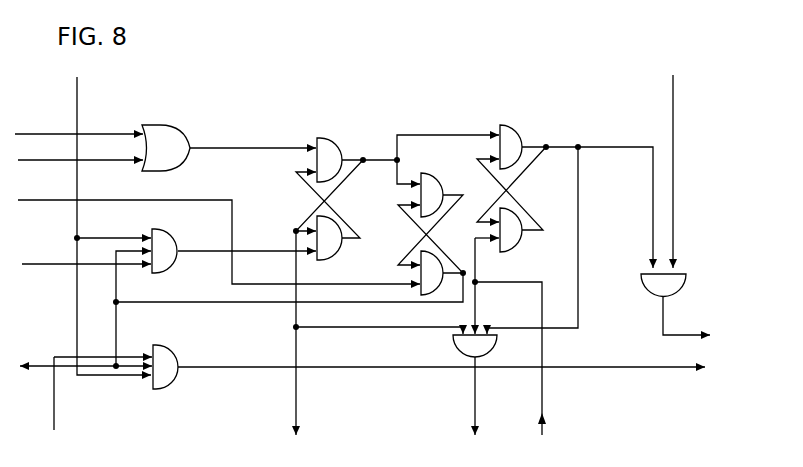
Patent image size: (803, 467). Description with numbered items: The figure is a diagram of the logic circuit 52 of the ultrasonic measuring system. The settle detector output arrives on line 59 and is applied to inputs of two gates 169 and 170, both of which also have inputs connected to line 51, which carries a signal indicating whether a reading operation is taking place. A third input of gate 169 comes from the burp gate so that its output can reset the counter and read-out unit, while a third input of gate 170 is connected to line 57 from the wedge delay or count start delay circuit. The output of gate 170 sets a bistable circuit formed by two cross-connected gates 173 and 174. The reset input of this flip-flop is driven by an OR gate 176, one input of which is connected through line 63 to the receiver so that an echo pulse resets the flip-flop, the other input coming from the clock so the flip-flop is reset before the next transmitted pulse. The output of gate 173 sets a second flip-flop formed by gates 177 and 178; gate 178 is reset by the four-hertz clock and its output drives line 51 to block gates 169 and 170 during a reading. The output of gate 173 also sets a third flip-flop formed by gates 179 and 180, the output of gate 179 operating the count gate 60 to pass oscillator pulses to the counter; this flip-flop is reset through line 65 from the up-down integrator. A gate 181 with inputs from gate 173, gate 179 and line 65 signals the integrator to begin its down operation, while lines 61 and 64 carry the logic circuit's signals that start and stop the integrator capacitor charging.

The logic circuit 52 is at (600, 58).
The line 59 is at (78, 92).
The line 63 is at (24, 163).
The OR gate 176 is at (173, 121).
The gate 173 is at (325, 138).
The gate 174 is at (331, 244).
The gate 177 is at (427, 153).
The gate 178 is at (428, 252).
The gate 179 is at (510, 134).
The gate 180 is at (514, 245).
The gate 170 is at (168, 240).
The gate 169 is at (168, 380).
The gate 181 is at (486, 345).
The gate circuit 60 is at (652, 281).
The line 57 is at (25, 267).
The line 51 is at (60, 358).
The line 61 is at (298, 394).
The line 64 is at (477, 394).
The line 65 is at (544, 394).